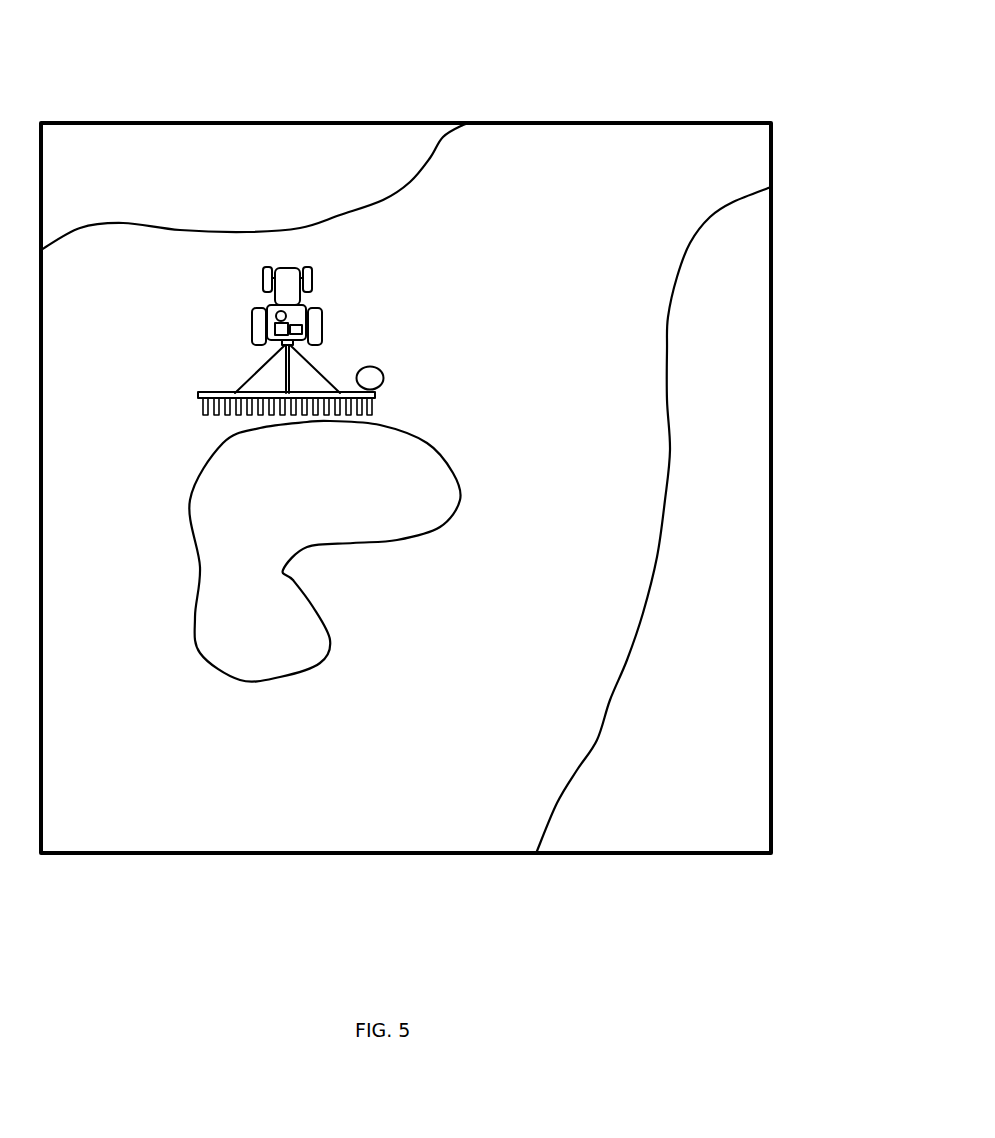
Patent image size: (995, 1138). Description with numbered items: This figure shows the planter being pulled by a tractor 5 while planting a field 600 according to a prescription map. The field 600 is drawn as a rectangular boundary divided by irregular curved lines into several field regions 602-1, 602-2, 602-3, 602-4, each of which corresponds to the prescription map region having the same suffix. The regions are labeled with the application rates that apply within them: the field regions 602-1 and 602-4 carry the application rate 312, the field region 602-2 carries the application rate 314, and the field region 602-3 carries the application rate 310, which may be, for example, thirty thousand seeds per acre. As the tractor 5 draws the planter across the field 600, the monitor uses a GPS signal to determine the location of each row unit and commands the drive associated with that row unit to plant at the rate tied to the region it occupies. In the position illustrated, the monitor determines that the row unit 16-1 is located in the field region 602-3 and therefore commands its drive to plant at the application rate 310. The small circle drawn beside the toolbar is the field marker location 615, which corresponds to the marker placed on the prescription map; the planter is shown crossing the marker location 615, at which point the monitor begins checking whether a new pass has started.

The field 600 is at (748, 252).
The application rate 312 is at (243, 182).
The application rate 310 is at (583, 572).
The application rate 314 is at (270, 506).
The tractor 5 is at (219, 294).
The row unit 16-1 is at (200, 416).
The field marker location 615 is at (377, 365).
The field region 602-1 is at (140, 153).
The field region 602-2 is at (295, 647).
The field region 602-3 is at (225, 783).
The field region 602-4 is at (647, 783).